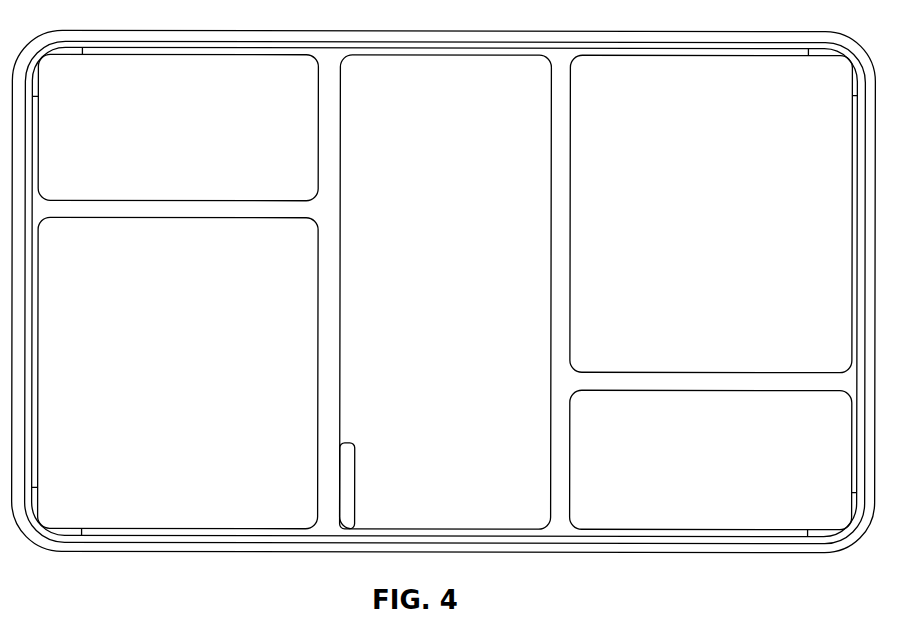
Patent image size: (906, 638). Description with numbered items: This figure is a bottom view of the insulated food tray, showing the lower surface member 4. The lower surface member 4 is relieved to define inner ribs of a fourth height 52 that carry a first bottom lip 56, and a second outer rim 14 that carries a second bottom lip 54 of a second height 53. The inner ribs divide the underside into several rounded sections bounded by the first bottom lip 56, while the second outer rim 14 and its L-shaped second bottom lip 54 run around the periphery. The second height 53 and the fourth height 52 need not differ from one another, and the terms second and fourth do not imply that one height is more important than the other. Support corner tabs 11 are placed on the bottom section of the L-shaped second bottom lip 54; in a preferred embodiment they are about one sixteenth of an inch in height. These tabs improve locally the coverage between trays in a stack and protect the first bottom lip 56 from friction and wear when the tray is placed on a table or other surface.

The lower surface member 4 is at (868, 182).
The second bottom lip 54 is at (858, 228).
The second height 53 is at (867, 285).
The first bottom lip 56 is at (558, 157).
The fourth height 52 is at (550, 217).
The second outer rim 14 is at (18, 374).
The support corner tabs 11 is at (35, 502).